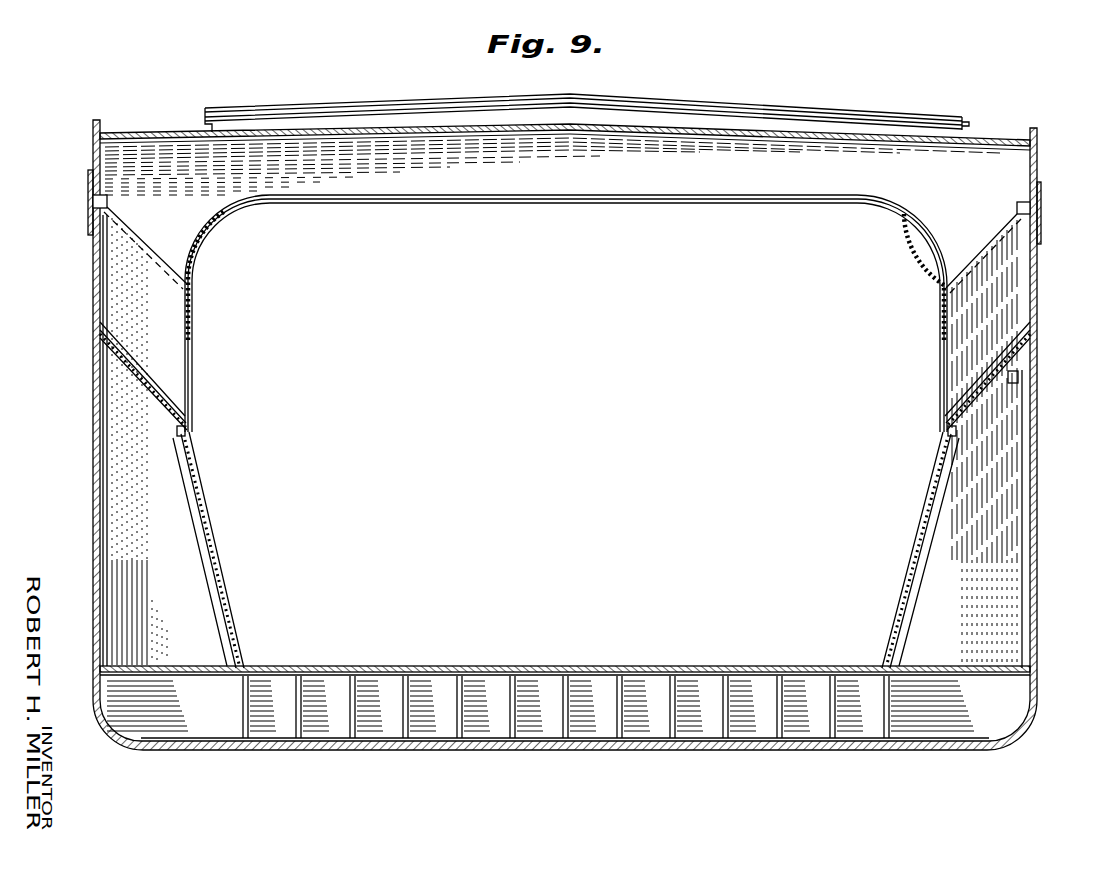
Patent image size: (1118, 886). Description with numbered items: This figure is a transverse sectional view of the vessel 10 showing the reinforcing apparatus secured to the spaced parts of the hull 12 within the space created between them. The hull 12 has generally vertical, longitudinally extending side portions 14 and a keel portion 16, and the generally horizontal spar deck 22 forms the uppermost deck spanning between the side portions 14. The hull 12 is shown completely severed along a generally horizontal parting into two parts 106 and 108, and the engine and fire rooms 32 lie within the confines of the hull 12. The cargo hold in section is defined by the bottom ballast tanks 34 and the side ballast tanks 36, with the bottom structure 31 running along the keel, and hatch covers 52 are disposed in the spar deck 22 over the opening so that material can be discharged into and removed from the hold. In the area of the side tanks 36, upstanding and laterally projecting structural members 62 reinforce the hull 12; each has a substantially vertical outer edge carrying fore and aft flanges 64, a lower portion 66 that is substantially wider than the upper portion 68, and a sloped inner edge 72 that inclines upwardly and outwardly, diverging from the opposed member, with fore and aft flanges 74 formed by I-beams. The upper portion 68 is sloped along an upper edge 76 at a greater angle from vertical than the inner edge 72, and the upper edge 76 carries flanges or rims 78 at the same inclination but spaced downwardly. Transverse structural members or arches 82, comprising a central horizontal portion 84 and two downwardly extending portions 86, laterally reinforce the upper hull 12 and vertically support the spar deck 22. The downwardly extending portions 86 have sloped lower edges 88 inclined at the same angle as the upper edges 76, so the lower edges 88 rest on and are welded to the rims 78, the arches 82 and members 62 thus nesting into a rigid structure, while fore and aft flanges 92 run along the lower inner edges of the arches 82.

The vessel 10 is at (1013, 122).
The hull 12 is at (90, 382).
The side portions 14 is at (94, 536).
The keel portion 16 is at (662, 751).
The spar deck 22 is at (148, 133).
The floor dividers 31 is at (500, 680).
The engine and fire rooms 32 is at (1013, 573).
The bottom ballast tanks 34 is at (598, 682).
The side ballast tanks 36 is at (135, 472).
The hatch covers 52 is at (700, 124).
The structural members 62 is at (149, 531).
The flanges 64 is at (1029, 605).
The lower portion 66 is at (1008, 668).
The upper portion 68 is at (1012, 473).
The inner edge 72 is at (206, 524).
The flanges 74 is at (228, 582).
The upper edge 76 is at (172, 388).
The flanges or rims 78 is at (190, 419).
The transverse structural members 82 is at (560, 203).
The central horizontal portion 84 is at (628, 186).
The downwardly extending portions 86 is at (189, 236).
The lower edges 88 is at (180, 291).
The flanges 92 is at (428, 206).
The hull part 106 is at (1041, 158).
The hull part 108 is at (1078, 453).